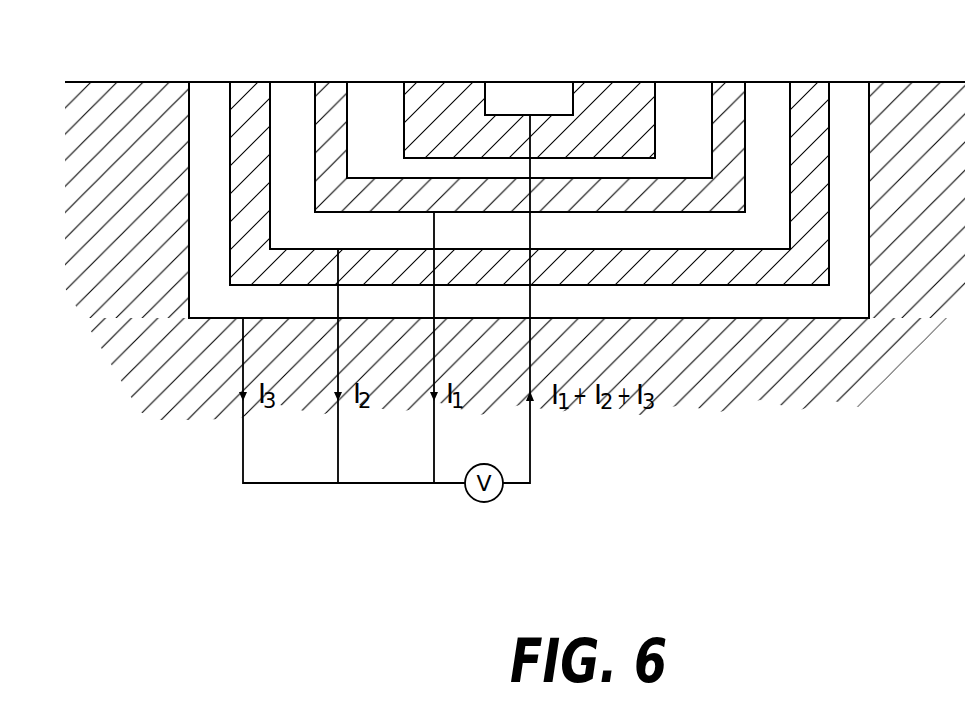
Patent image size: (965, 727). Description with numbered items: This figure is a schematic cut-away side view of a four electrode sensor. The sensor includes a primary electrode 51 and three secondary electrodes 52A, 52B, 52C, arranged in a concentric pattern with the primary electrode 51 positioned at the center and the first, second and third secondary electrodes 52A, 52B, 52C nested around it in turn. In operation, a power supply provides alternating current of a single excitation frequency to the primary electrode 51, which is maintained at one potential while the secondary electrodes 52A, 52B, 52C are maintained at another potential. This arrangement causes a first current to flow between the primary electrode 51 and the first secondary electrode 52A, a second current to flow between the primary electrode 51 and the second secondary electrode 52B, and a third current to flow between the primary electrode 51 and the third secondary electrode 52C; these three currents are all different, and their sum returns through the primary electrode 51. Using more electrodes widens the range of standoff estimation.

The primary electrode 51 is at (525, 102).
The first secondary electrode 52A is at (377, 103).
The second secondary electrode 52B is at (294, 102).
The third secondary electrode 52C is at (211, 98).